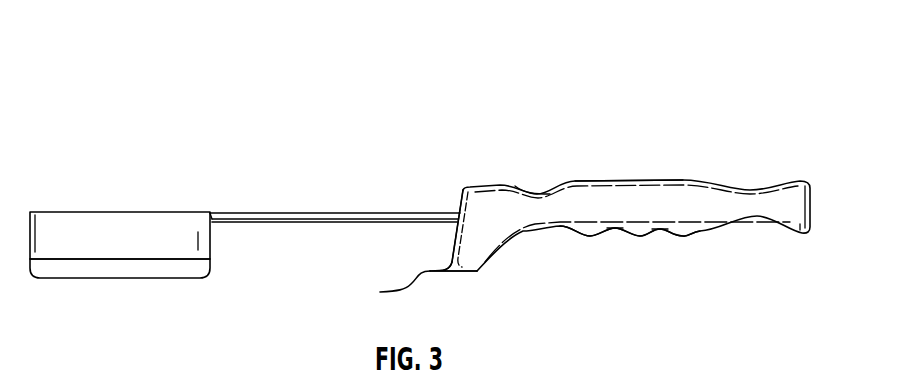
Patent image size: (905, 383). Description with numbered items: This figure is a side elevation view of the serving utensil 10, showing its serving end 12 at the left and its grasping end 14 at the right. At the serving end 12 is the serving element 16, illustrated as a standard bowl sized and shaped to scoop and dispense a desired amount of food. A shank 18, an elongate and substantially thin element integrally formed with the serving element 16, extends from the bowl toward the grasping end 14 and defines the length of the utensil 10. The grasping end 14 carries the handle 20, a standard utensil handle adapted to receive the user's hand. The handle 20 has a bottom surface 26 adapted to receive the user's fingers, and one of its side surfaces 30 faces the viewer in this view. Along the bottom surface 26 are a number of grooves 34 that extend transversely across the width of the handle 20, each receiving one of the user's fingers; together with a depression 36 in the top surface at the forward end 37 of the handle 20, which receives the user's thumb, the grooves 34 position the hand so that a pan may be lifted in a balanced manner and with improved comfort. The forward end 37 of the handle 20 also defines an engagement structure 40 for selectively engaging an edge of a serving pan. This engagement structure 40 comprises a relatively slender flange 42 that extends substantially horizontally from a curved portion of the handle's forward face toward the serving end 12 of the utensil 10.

The serving utensil 10 is at (158, 90).
The serving end 12 is at (74, 184).
The grasping end 14 is at (733, 148).
The serving element 16 is at (154, 270).
The shank 18 is at (257, 213).
The handle 20 is at (614, 172).
The bottom surface 26 is at (658, 237).
The side surface 30 is at (614, 213).
The grooves 34 is at (590, 237).
The depression 36 is at (545, 191).
The forward end 37 is at (475, 176).
The engagement structure 40 is at (462, 293).
The flange 42 is at (393, 288).